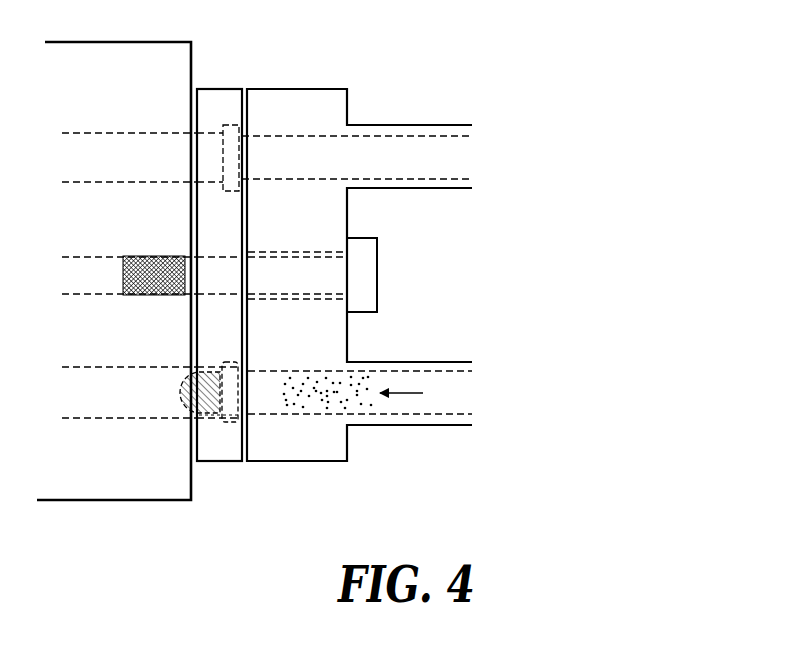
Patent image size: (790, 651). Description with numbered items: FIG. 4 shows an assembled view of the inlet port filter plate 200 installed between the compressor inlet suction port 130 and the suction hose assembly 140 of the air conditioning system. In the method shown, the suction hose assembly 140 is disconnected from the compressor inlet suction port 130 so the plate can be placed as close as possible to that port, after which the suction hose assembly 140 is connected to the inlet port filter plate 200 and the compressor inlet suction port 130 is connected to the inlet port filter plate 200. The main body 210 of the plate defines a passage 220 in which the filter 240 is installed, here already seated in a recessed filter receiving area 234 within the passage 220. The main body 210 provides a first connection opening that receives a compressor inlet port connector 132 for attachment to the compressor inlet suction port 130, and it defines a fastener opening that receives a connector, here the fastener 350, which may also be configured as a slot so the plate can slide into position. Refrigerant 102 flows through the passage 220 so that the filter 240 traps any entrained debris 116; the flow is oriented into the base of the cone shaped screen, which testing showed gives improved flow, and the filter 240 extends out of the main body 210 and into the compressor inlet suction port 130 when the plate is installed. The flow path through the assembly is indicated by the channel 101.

The fluid channel 101 is at (398, 394).
The refrigerant 102 is at (465, 405).
The entrained debris 116 is at (368, 383).
The compressor inlet suction port 130 is at (204, 502).
The compressor inlet port connector 132 is at (156, 350).
The suction hose assembly 140 is at (391, 446).
The inlet port filter plate 200 is at (222, 64).
The main body 210 is at (236, 230).
The passage 220 is at (203, 418).
The recessed filter receiving area 234 is at (226, 422).
The filter 240 is at (184, 408).
The fastener 350 is at (365, 272).